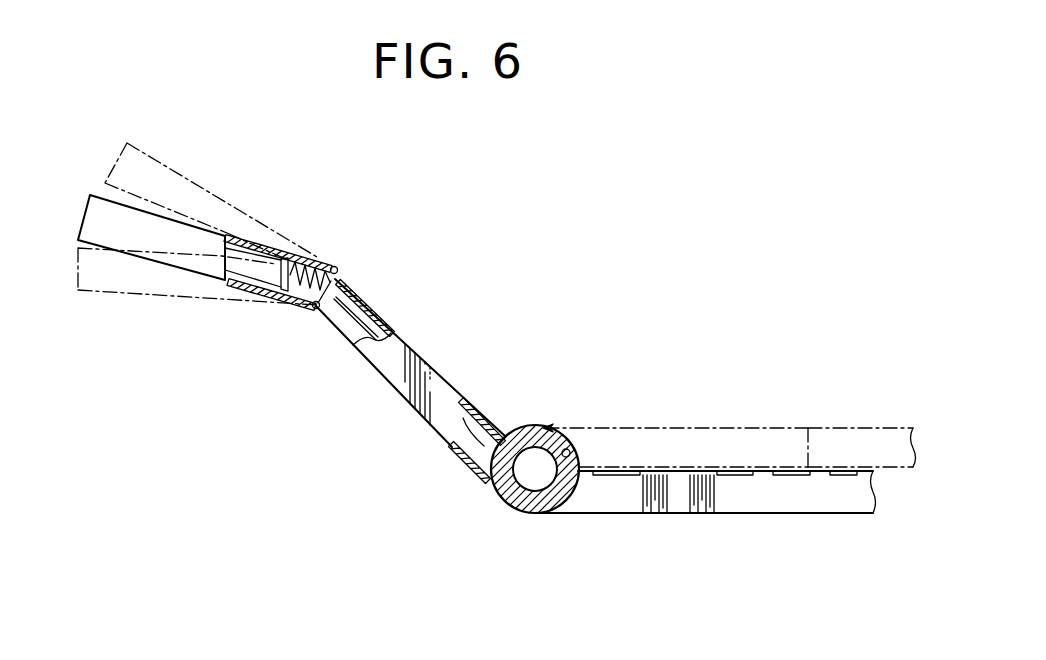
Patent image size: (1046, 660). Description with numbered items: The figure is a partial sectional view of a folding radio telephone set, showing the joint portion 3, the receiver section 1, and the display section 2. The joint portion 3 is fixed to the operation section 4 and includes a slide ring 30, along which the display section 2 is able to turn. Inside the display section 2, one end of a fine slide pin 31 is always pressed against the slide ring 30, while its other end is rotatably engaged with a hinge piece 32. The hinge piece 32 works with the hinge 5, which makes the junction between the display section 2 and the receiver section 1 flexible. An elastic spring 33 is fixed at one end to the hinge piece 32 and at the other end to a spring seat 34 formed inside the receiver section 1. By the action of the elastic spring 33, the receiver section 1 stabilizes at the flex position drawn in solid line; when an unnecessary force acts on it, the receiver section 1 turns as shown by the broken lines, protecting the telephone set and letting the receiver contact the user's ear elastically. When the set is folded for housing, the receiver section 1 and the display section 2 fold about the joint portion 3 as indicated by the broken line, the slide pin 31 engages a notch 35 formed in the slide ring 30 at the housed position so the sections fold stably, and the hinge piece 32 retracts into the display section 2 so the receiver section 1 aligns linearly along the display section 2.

The receiver section 1 is at (82, 217).
The display section 2 is at (428, 358).
The joint portion 3 is at (512, 502).
The operation section 4 is at (703, 472).
The hinge 5 is at (316, 308).
The slide ring 30 is at (550, 513).
The slide pin 31 is at (467, 461).
The hinge piece 32 is at (335, 268).
The elastic spring 33 is at (321, 263).
The spring seat 34 is at (273, 272).
The notch 35 is at (578, 450).